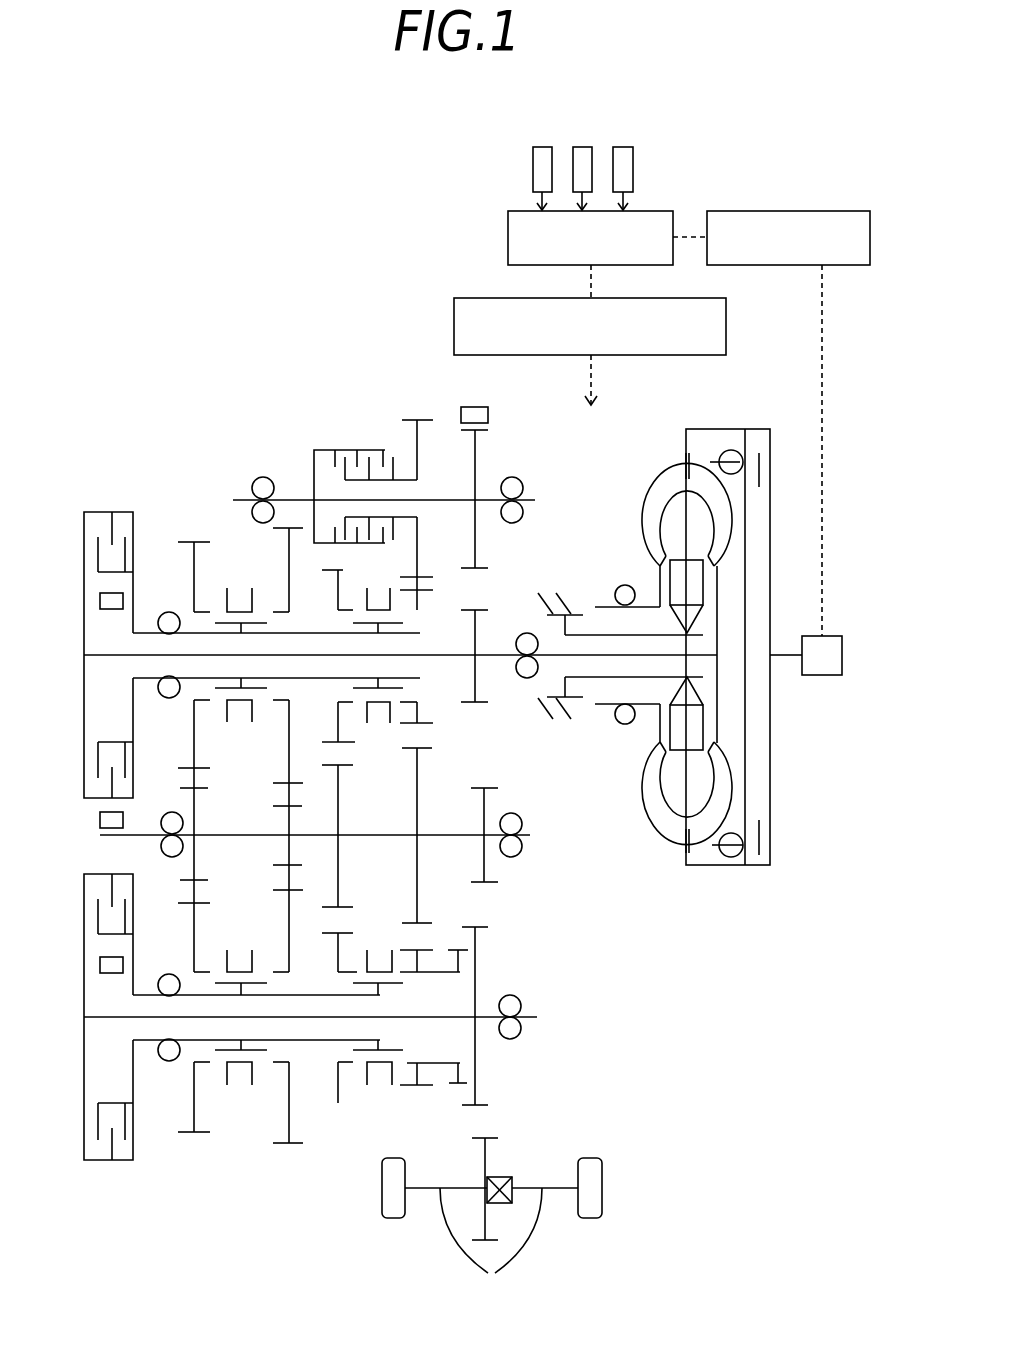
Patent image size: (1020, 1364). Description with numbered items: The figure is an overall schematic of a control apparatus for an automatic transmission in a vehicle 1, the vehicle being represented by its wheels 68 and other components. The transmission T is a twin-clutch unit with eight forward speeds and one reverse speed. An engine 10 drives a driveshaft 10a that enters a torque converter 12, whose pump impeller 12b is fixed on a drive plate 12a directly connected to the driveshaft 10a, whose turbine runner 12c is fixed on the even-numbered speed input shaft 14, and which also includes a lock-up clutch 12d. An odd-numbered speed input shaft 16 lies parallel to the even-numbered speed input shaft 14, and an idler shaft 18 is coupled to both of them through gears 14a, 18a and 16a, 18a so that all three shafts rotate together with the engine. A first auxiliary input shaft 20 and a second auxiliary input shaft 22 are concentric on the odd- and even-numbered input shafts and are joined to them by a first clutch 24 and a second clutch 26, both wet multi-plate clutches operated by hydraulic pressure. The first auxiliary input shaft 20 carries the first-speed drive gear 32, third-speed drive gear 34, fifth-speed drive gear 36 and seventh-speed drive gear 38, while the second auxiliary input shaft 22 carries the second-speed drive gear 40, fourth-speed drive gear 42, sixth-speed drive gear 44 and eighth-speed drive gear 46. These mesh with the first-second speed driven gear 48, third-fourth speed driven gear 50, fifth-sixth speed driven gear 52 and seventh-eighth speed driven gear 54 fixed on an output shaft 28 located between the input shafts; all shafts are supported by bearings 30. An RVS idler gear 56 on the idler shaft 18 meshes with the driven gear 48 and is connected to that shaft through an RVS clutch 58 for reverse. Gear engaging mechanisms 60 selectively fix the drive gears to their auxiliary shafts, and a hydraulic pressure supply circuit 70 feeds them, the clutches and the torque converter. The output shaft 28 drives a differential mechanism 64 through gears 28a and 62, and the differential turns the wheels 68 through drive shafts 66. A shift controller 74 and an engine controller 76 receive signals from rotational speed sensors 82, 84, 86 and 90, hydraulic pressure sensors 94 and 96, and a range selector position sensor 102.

The vehicle 1 is at (623, 1122).
The transmission T is at (135, 420).
The engine 10 is at (837, 636).
The driveshaft 10a is at (786, 656).
The torque converter 12 is at (705, 428).
The drive plate 12a is at (740, 429).
The pump impeller 12b is at (656, 482).
The turbine runner 12c is at (735, 776).
The lock-up clutch 12d is at (743, 862).
The even-numbered speed input shaft 14 is at (481, 655).
The gear 14a is at (477, 703).
The odd-numbered speed input shaft 16 is at (525, 1017).
The gear 16a is at (488, 927).
The idler shaft 18 is at (524, 488).
The gear 18a is at (488, 569).
The first auxiliary input shaft 20 is at (380, 995).
The second auxiliary input shaft 22 is at (414, 633).
The first clutch 24 is at (120, 1162).
The second clutch 26 is at (124, 512).
The output shaft 28 is at (522, 825).
The gear 28a is at (492, 788).
The bearings 30 is at (169, 612).
The first-speed drive gear 32 is at (422, 948).
The third-speed drive gear 34 is at (324, 934).
The fifth-speed drive gear 36 is at (190, 903).
The seventh-speed drive gear 38 is at (283, 890).
The second-speed drive gear 40 is at (433, 723).
The fourth-speed drive gear 42 is at (330, 742).
The sixth-speed drive gear 44 is at (192, 767).
The eighth-speed drive gear 46 is at (281, 783).
The first-second speed driven gear 48 is at (420, 749).
The third-fourth speed driven gear 50 is at (346, 767).
The fifth-sixth speed driven gear 52 is at (203, 789).
The seventh-eighth speed driven gear 54 is at (300, 806).
The RVS idler gear 56 is at (417, 420).
The RVS clutch 58 is at (328, 450).
The gear engaging mechanisms 60 is at (241, 598).
The gear 62 is at (495, 1138).
The differential mechanism 64 is at (508, 1177).
The drive shafts 66 is at (491, 1246).
The wheels 68 is at (382, 1185).
The hydraulic pressure supply circuit 70 is at (505, 298).
The shift controller 74 is at (508, 218).
The engine controller 76 is at (815, 211).
The first rotational speed sensor 82 is at (475, 407).
The second rotational speed sensor 84 is at (115, 973).
The third rotational speed sensor 86 is at (115, 609).
The fourth rotational speed sensor 90 is at (100, 821).
The first hydraulic pressure sensor 94 is at (540, 147).
The second hydraulic pressure sensor 96 is at (584, 147).
The range selector position sensor 102 is at (622, 147).